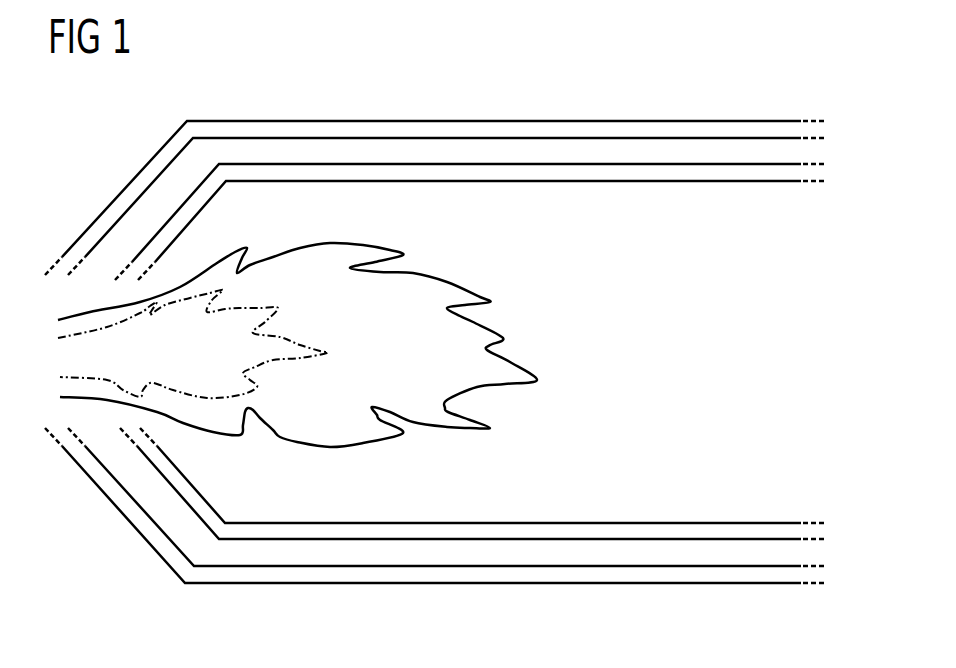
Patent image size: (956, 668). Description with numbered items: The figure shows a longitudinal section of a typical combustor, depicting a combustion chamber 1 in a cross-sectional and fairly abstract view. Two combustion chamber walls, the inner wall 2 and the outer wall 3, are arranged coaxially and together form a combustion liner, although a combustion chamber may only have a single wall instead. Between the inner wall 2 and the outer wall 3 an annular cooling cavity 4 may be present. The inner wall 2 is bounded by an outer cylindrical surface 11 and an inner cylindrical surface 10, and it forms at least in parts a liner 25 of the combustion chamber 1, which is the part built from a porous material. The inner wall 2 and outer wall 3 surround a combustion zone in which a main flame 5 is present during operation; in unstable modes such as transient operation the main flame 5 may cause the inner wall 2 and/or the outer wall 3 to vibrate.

The combustion chamber 1 is at (615, 362).
The inner wall 2 is at (696, 170).
The outer wall 3 is at (662, 126).
The annular cooling cavity 4 is at (550, 144).
The main flame 5 is at (488, 341).
The inner cylindrical surface 10 is at (467, 192).
The outer cylindrical surface 11 is at (465, 154).
The liner 25 is at (520, 542).